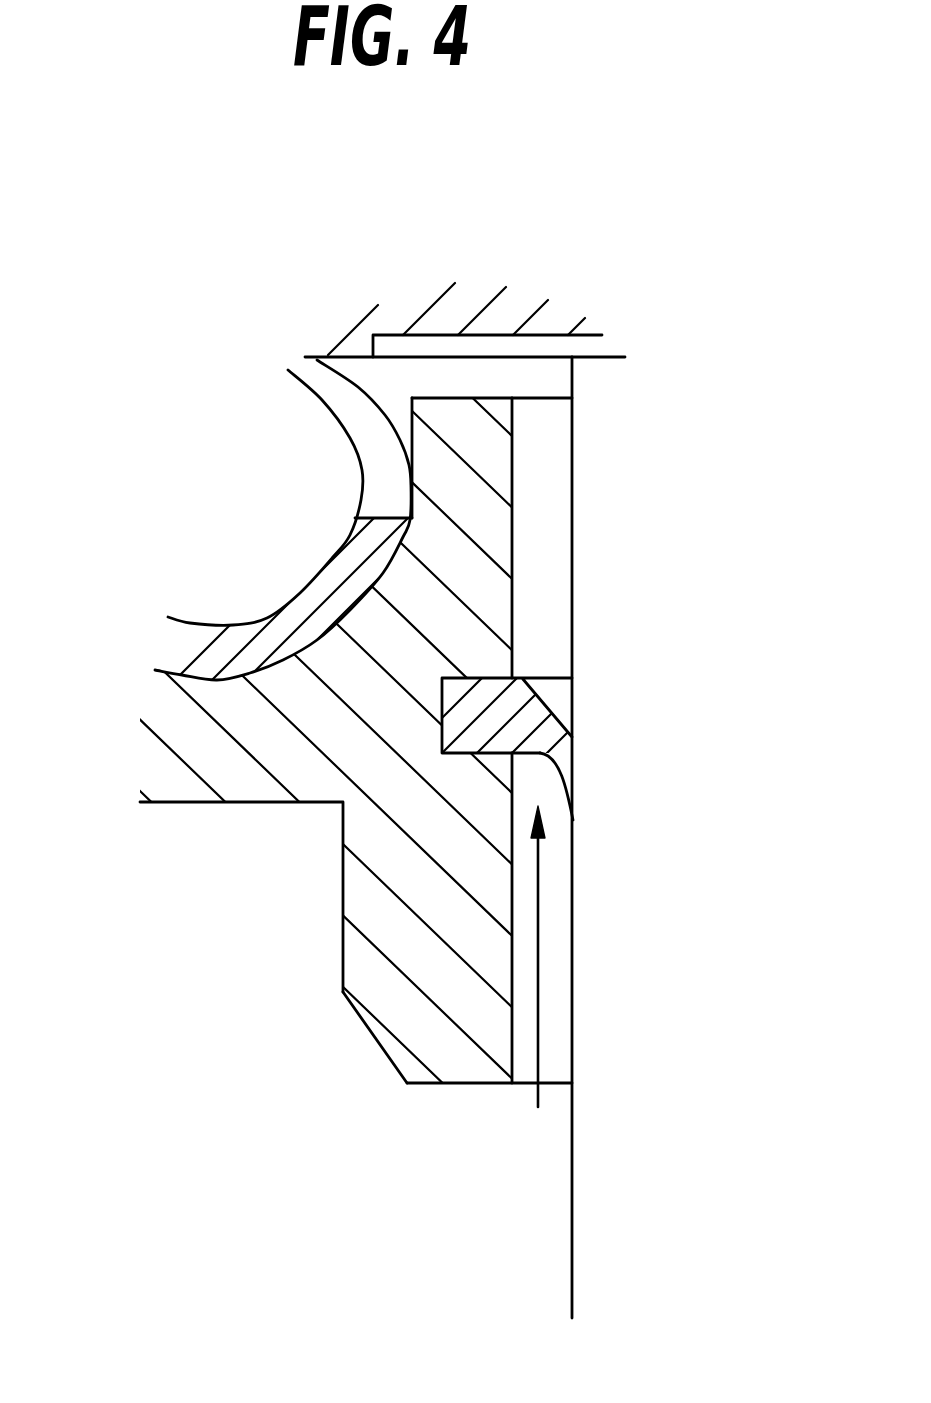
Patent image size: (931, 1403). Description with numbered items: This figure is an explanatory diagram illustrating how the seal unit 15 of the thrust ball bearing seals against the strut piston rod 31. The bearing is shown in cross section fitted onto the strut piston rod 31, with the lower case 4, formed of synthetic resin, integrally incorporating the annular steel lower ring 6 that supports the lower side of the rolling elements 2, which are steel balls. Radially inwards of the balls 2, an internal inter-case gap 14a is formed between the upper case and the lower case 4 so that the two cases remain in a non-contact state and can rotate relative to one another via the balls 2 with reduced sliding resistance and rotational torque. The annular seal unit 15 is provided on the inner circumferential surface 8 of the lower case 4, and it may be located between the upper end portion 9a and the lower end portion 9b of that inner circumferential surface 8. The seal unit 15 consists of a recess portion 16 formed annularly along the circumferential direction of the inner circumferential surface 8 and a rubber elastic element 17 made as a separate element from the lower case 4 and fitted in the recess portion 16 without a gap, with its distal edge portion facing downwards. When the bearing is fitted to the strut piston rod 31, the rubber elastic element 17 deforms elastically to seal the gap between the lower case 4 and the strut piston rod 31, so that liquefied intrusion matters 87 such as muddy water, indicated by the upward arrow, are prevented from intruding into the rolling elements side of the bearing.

The rolling elements 2 is at (220, 547).
The lower case 4 is at (208, 768).
The lower ring 6 is at (157, 650).
The inner circumferential surface 8 is at (510, 967).
The upper end portion 9a is at (487, 380).
The lower end portion 9b is at (482, 1083).
The internal inter-case gap 14a is at (483, 380).
The seal unit 15 is at (411, 827).
The recess portion 16 is at (443, 732).
The rubber elastic element 17 is at (484, 745).
The strut piston rod 31 is at (598, 1238).
The liquefied intrusion matters 87 is at (538, 1095).